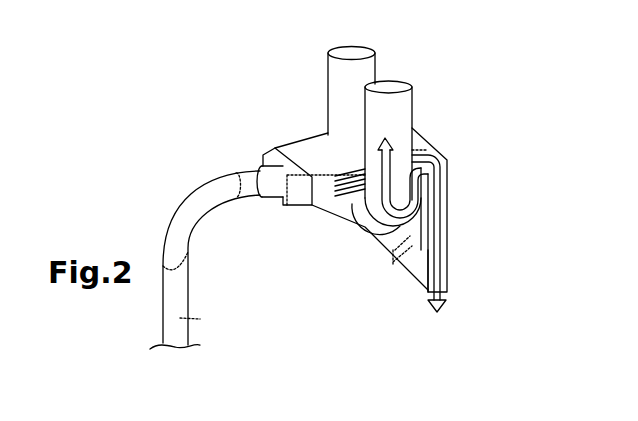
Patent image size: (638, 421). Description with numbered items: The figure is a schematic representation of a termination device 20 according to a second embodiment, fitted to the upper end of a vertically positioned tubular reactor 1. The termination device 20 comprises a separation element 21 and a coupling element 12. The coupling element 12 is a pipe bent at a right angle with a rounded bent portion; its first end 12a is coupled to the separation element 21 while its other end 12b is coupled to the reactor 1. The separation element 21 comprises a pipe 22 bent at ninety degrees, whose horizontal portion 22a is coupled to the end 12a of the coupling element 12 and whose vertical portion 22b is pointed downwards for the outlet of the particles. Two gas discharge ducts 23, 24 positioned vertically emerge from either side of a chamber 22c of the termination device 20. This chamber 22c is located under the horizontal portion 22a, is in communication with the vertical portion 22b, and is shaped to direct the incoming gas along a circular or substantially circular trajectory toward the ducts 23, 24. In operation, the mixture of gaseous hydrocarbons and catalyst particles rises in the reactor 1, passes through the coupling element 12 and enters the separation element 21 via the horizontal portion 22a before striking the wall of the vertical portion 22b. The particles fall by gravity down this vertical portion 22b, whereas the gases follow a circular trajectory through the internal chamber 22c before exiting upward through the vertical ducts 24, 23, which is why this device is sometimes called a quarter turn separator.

The tubular reactor 1 is at (185, 318).
The coupling element 12 is at (178, 193).
The first end of the coupling element 12a is at (240, 173).
The other end of the coupling element 12b is at (188, 252).
The termination device 20 is at (315, 297).
The separation element 21 is at (448, 127).
The pipe bent at 90° 22 is at (448, 163).
The horizontal portion 22a is at (308, 152).
The vertical portion 22b is at (450, 220).
The chamber 22c is at (395, 262).
The gas discharge duct 23 is at (413, 103).
The gas discharge duct 24 is at (372, 62).